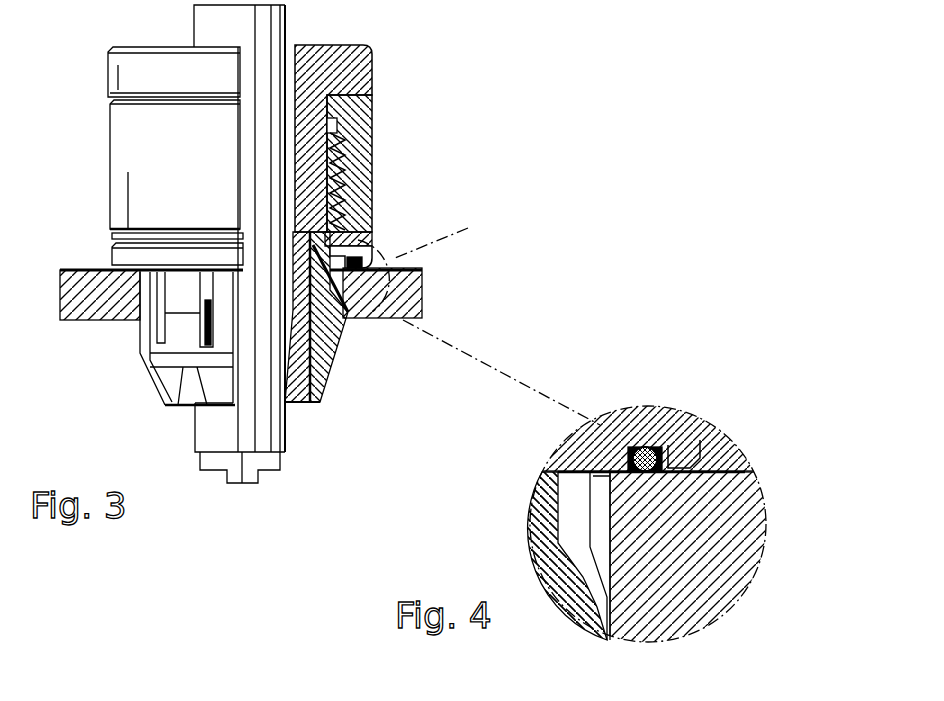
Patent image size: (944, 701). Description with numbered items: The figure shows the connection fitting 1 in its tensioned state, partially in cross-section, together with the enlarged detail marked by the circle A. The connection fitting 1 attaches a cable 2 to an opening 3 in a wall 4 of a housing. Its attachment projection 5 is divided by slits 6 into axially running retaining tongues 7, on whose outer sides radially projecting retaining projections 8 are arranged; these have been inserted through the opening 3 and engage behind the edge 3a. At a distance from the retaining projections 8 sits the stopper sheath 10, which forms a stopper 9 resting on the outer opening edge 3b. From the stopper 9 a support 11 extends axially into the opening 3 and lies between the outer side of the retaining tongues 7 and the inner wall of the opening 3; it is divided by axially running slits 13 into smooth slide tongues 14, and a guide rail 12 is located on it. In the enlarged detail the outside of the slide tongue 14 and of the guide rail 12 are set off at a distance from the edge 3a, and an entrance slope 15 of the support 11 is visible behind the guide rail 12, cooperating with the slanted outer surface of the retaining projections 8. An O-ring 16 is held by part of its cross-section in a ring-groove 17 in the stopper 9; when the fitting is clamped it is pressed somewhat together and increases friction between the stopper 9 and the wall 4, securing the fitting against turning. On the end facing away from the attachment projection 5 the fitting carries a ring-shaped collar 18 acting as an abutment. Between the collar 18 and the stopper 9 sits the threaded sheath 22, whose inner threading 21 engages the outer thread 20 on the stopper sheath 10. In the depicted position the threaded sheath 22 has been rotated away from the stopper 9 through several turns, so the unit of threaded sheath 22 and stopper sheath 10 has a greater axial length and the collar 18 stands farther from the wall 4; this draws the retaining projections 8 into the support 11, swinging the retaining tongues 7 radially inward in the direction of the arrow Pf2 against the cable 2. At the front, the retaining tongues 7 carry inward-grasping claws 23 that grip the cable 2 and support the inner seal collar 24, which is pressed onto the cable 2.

In FIG. 3, the connection fitting 1 is at (474, 177).
In FIG. 3, the cable 2 is at (207, 433).
In FIG. 3, the opening 3 is at (137, 289).
In FIG. 4, the opening 3 is at (605, 512).
In FIG. 4, the edge 3a is at (637, 630).
In FIG. 3, the opening edge 3b is at (385, 271).
In FIG. 4, the opening edge 3b is at (620, 468).
In FIG. 3, the wall 4 is at (80, 287).
In FIG. 4, the wall 4 is at (750, 517).
In FIG. 3, the attachment projection 5 is at (133, 394).
In FIG. 3, the slits 6 is at (188, 384).
In FIG. 3, the retaining tongues 7 is at (330, 378).
In FIG. 3, the retaining projections 8 is at (155, 363).
In FIG. 3, the stopper 9 is at (362, 252).
In FIG. 4, the stopper 9 is at (641, 414).
In FIG. 3, the stopper sheath 10 is at (352, 216).
In FIG. 4, the support 11 is at (546, 489).
In FIG. 3, the guide rail 12 is at (211, 290).
In FIG. 4, the guide rail 12 is at (615, 578).
In FIG. 3, the slits 13 is at (218, 300).
In FIG. 3, the slide tongues 14 is at (190, 284).
In FIG. 4, the slide tongues 14 is at (545, 537).
In FIG. 4, the entrance slope 15 is at (557, 606).
In FIG. 4, the O-ring 16 is at (662, 447).
In FIG. 4, the ring-groove 17 is at (697, 430).
In FIG. 3, the collar 18 is at (362, 70).
In FIG. 3, the outer thread 20 is at (340, 168).
In FIG. 3, the inner threading 21 is at (340, 125).
In FIG. 3, the threaded sheath 22 is at (365, 108).
In FIG. 3, the claws 23 is at (295, 400).
In FIG. 3, the seal collar 24 is at (330, 392).
In FIG. 3, the circle A is at (479, 318).
In FIG. 3, the arrow Pf2 is at (275, 428).